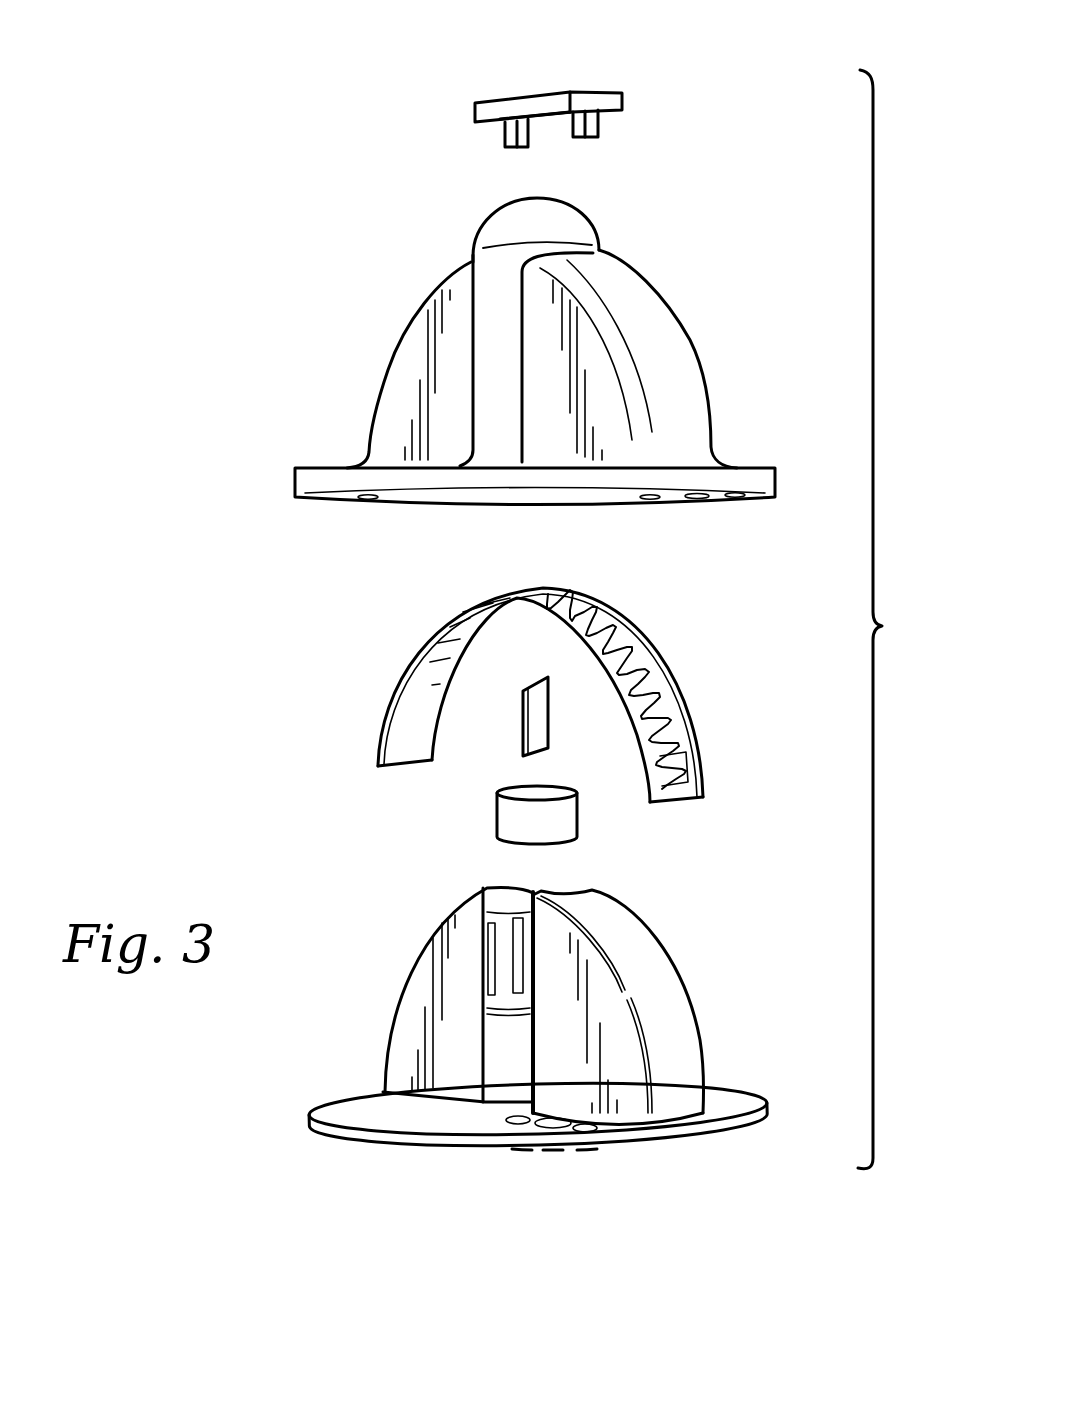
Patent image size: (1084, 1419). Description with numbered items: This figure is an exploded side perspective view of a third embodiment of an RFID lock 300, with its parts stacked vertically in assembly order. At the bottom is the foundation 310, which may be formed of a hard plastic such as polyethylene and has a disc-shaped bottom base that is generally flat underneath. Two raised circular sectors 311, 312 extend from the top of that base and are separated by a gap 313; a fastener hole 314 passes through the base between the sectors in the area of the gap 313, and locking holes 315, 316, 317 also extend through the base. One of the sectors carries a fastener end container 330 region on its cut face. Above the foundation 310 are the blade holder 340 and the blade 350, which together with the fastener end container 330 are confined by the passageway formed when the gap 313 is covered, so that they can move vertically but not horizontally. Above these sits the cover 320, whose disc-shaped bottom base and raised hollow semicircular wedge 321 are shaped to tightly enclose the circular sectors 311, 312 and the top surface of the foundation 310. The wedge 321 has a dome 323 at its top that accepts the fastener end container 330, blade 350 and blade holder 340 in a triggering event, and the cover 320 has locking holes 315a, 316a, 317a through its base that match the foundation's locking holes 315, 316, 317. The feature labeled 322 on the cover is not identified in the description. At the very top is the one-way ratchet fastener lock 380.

The RFID lock 300 is at (901, 619).
The one-way ratchet fastener lock 380 is at (577, 76).
The cover 320 is at (561, 399).
The raised hollow semicircular wedge 321 is at (554, 345).
The flange 322 is at (520, 541).
The dome 323 is at (460, 217).
The locking hole 315a is at (673, 560).
The locking hole 316a is at (738, 550).
The locking hole 317a is at (791, 528).
The blade 350 is at (460, 751).
The blade holder 340 is at (603, 838).
The foundation 310 is at (553, 1071).
The raised circular sector 311 is at (662, 1007).
The raised circular sector 312 is at (410, 974).
The gap 313 is at (396, 987).
The fastener end container 330 is at (415, 956).
The fastener hole 314 is at (472, 1152).
The locking hole 315 is at (497, 1217).
The locking hole 316 is at (577, 1223).
The locking hole 317 is at (634, 1205).